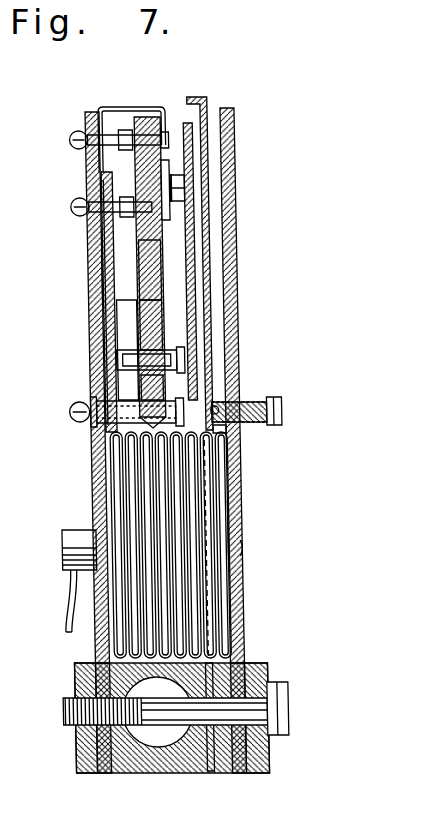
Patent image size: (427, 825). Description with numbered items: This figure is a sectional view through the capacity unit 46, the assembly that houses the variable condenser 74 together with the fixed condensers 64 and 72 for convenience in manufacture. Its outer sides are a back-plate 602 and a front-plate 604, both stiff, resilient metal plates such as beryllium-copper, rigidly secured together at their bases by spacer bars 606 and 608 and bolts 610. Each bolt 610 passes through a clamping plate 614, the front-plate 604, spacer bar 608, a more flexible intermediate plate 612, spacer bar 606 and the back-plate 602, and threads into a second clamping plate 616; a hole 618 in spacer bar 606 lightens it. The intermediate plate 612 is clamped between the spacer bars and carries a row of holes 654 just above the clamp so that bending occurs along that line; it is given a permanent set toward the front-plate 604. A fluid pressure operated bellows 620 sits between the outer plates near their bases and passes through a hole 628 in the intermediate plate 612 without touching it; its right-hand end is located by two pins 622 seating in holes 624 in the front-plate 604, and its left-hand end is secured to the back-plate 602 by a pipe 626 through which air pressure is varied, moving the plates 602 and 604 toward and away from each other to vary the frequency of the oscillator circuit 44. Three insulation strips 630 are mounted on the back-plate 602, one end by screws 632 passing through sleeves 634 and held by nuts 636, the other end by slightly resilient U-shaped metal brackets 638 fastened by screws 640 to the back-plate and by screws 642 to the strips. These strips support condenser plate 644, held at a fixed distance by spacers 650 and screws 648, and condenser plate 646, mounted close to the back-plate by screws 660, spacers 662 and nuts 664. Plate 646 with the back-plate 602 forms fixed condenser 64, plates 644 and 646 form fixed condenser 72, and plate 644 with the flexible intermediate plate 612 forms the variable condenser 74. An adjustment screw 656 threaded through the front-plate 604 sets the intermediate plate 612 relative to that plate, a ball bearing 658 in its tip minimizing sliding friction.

The capacity unit 46 is at (270, 104).
The oscillator circuit 44 is at (268, 824).
The fixed condenser 64 is at (97, 262).
The fixed condenser 72 is at (110, 246).
The variable condenser 74 is at (183, 232).
The back-plate 602 is at (94, 475).
The front-plate 604 is at (234, 462).
The spacer bar 606 is at (100, 766).
The spacer bar 608 is at (215, 765).
The bolt 610 is at (270, 700).
The intermediate plate 612 is at (193, 241).
The clamping plate 614 is at (250, 673).
The second clamping plate 616 is at (70, 680).
The hole 618 is at (152, 745).
The bellows 620 is at (182, 579).
The pin 622 is at (230, 545).
The hole 624 is at (232, 548).
The pipe 626 is at (70, 545).
The hole 628 is at (208, 433).
The insulation strip 630 is at (149, 270).
The screw 632 is at (72, 412).
The sleeve 634 is at (115, 408).
The nut 636 is at (150, 384).
The U-shaped metal bracket 638 is at (122, 106).
The screw 640 is at (76, 133).
The screw 642 is at (155, 117).
The condenser plate 644 is at (207, 296).
The condenser plate 646 is at (98, 300).
The screw 648 is at (184, 189).
The spacer 650 is at (163, 185).
The hole 654 is at (86, 183).
The adjustment screw 656 is at (270, 400).
The ball bearing 658 is at (212, 406).
The screw 660 is at (112, 361).
The spacer 662 is at (108, 345).
The nut 664 is at (149, 325).